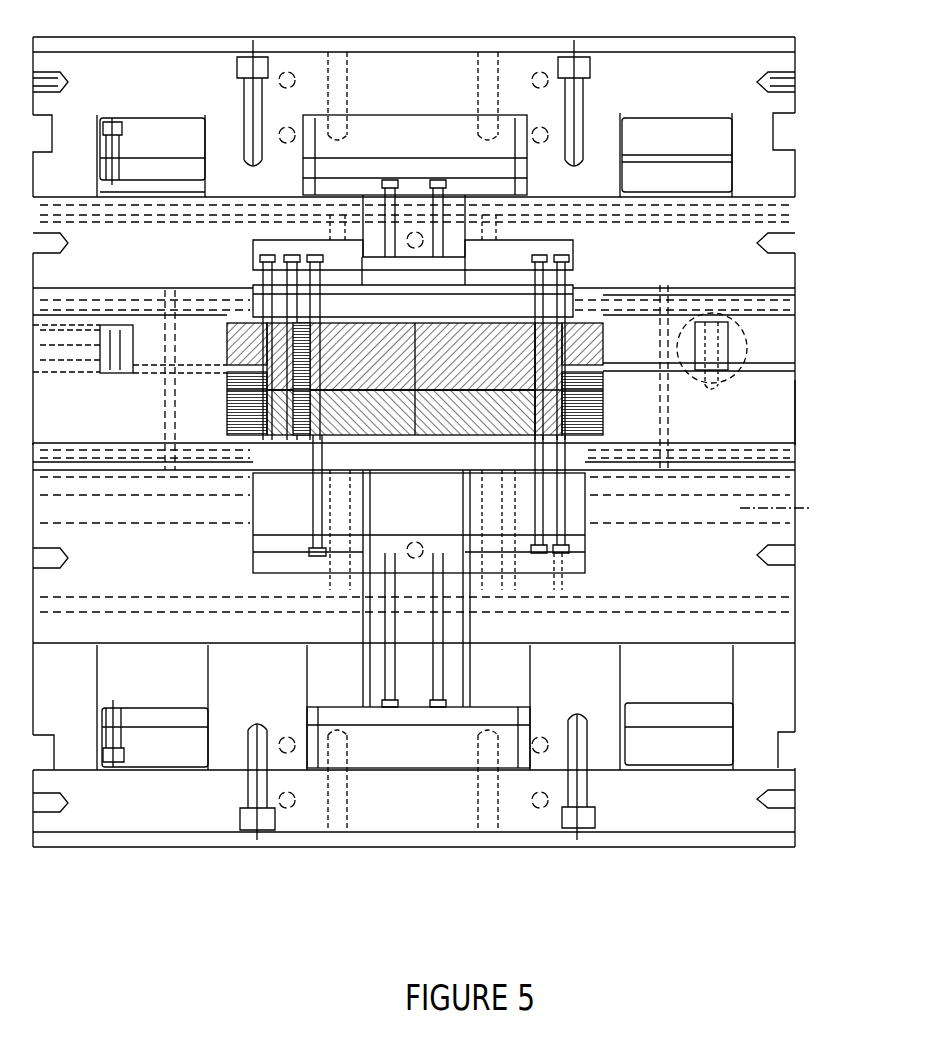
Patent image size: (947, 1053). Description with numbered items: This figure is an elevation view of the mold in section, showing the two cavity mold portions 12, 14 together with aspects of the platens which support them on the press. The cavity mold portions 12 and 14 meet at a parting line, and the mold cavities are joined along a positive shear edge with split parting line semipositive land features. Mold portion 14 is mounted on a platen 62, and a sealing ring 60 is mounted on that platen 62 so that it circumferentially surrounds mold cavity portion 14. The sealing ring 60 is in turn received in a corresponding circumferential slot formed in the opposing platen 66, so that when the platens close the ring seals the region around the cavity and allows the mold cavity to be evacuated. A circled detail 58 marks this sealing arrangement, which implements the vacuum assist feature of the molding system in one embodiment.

The cavity mold portion 12 is at (401, 356).
The cavity mold portion 14 is at (401, 412).
The detail 58 is at (763, 352).
The sealing ring 60 is at (736, 335).
The platen 62 is at (769, 395).
The platen 66 is at (699, 352).